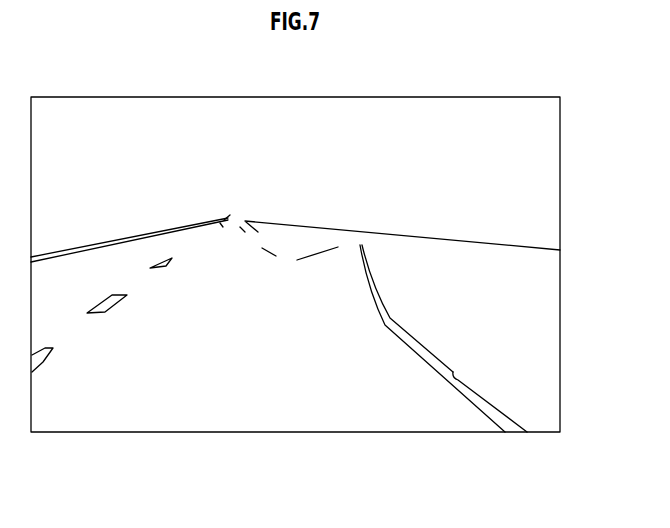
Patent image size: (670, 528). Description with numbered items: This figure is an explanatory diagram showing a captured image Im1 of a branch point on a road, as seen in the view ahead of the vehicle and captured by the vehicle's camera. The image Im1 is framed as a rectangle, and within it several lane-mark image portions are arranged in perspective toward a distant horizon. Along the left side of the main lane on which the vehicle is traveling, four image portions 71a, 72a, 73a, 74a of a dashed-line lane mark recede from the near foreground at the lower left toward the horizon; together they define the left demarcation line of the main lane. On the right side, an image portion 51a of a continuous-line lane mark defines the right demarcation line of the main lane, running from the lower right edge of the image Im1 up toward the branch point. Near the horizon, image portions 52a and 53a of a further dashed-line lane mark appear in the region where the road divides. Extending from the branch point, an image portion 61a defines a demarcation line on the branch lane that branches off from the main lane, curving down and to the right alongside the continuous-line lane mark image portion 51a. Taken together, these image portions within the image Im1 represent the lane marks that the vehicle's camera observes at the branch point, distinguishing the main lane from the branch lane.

The image Im1 is at (205, 97).
The image portion of a continuous-line lane mark 51a is at (457, 371).
The image portion of a dashed-line lane mark 52a is at (274, 254).
The image portion of a dashed-line lane mark 53a is at (259, 239).
The image portion defining a demarcation line on a branch lane 61a is at (380, 304).
The image portion of a dashed-line lane mark 71a is at (45, 360).
The image portion of a dashed-line lane mark 72a is at (105, 308).
The image portion of a dashed-line lane mark 73a is at (163, 266).
The image portion of a dashed-line lane mark 74a is at (202, 238).